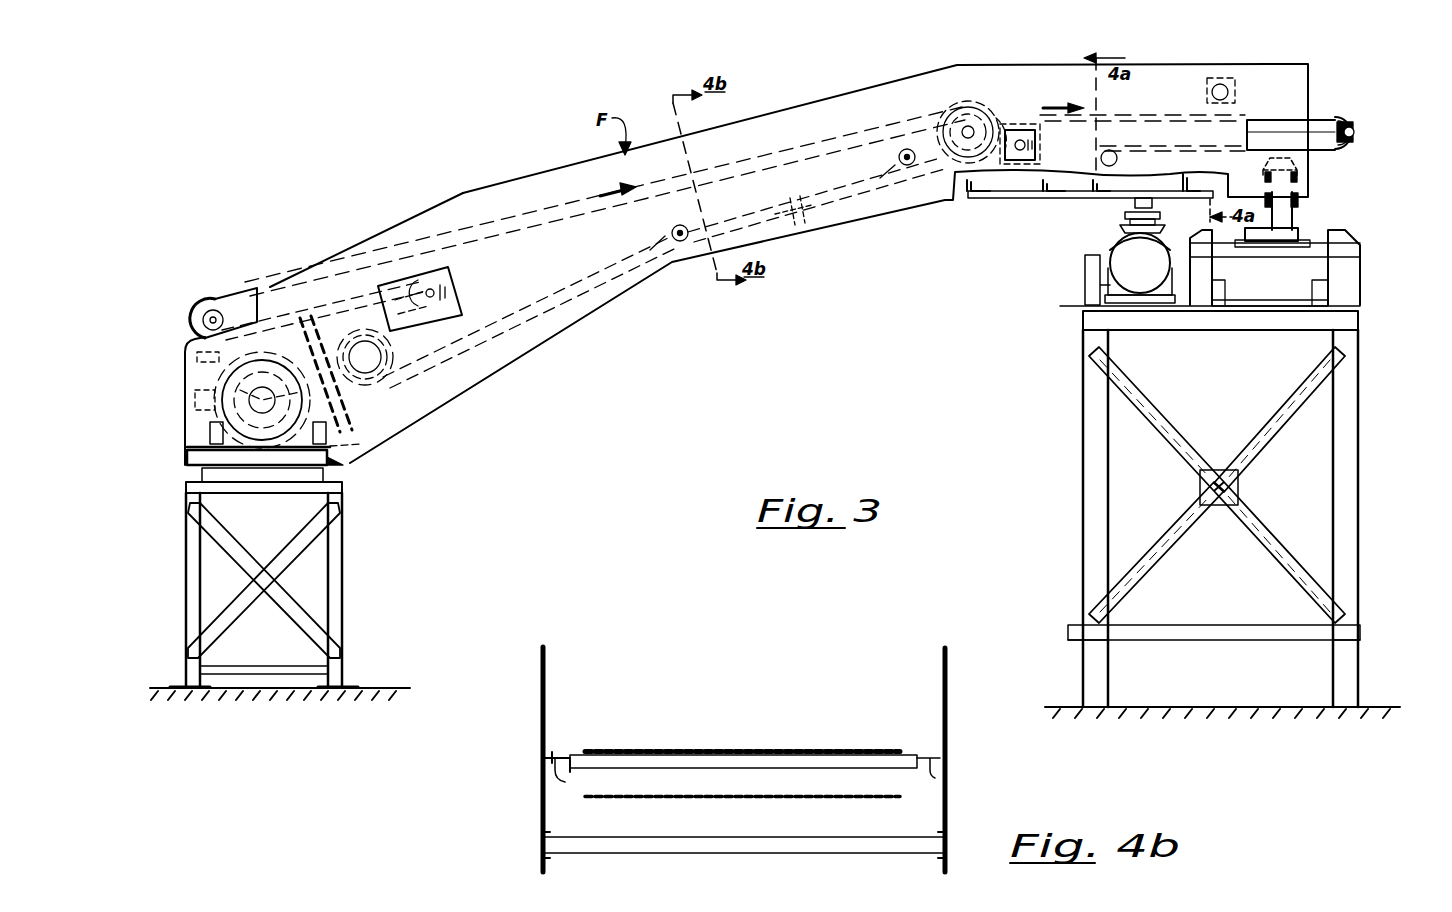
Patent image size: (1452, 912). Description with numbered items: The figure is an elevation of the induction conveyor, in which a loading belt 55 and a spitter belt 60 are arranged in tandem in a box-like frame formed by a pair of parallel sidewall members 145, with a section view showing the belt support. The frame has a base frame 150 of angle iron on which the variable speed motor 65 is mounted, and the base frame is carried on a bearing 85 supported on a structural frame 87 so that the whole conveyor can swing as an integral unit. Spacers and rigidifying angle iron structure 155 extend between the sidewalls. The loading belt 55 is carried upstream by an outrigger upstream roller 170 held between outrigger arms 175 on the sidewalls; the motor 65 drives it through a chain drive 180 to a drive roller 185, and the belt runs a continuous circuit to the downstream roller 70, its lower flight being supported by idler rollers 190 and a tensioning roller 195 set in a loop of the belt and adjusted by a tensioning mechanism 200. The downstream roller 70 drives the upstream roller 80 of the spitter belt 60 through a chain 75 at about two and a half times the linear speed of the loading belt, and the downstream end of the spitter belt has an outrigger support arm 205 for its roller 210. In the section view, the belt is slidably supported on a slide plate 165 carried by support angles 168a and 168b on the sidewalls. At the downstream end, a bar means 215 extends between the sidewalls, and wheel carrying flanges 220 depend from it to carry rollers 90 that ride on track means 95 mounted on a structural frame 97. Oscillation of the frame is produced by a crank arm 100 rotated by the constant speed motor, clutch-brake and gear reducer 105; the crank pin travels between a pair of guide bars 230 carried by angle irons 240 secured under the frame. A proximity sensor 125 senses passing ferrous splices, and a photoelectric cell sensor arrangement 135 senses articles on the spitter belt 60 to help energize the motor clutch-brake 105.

In FIG. 3, the loading belt 55 is at (778, 162).
In FIG. 4B, the loading belt 55 is at (795, 796).
In FIG. 3, the spitter belt 60 is at (1160, 115).
In FIG. 3, the variable speed motor 65 is at (188, 374).
In FIG. 3, the downstream roller 70 is at (950, 112).
In FIG. 3, the chain 75 is at (993, 112).
In FIG. 3, the upstream roller 80 is at (1040, 144).
In FIG. 3, the bearing 85 is at (227, 473).
In FIG. 3, the structural frame 87 is at (332, 596).
In FIG. 3, the rollers 90 is at (1290, 217).
In FIG. 3, the track means 95 is at (1248, 247).
In FIG. 3, the structural frame 97 is at (1103, 522).
In FIG. 3, the crank arm 100 is at (1124, 222).
In FIG. 3, the constant speed motor 105 is at (1128, 256).
In FIG. 3, the proximity sensor 125 is at (798, 220).
In FIG. 3, the photoelectric cell sensor arrangement 135 is at (1232, 92).
In FIG. 3, the sidewall members 145 is at (585, 328).
In FIG. 3, the base frame 150 is at (343, 463).
In FIG. 3, the rigidifying angle iron structure 155 is at (345, 405).
In FIG. 4B, the slide plate 165 is at (553, 755).
In FIG. 4B, the support angle 168a is at (589, 777).
In FIG. 4B, the support angle 168b is at (916, 776).
In FIG. 3, the outrigger upstream roller 170 is at (200, 315).
In FIG. 3, the outrigger arms 175 is at (240, 305).
In FIG. 3, the chain drive 180 is at (268, 389).
In FIG. 3, the drive roller 185 is at (386, 357).
In FIG. 3, the idler rollers 190 is at (668, 243).
In FIG. 3, the tensioning roller 195 is at (455, 290).
In FIG. 3, the tensioning mechanism 200 is at (466, 305).
In FIG. 3, the outrigger support arm 205 is at (1326, 140).
In FIG. 3, the roller 210 is at (1362, 120).
In FIG. 3, the bar means 215 is at (1291, 135).
In FIG. 3, the wheel carrying flanges 220 is at (1266, 178).
In FIG. 3, the guide bars 230 is at (1030, 200).
In FIG. 3, the angle irons 240 is at (968, 195).